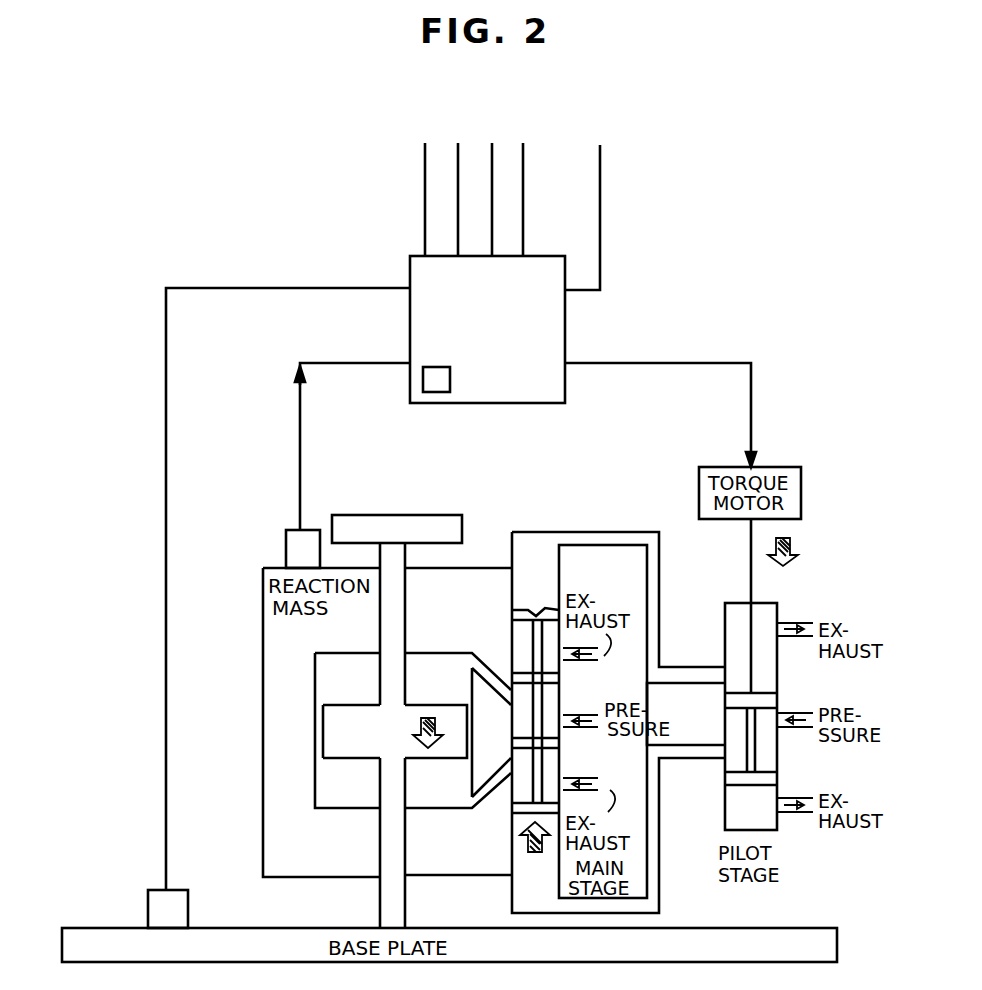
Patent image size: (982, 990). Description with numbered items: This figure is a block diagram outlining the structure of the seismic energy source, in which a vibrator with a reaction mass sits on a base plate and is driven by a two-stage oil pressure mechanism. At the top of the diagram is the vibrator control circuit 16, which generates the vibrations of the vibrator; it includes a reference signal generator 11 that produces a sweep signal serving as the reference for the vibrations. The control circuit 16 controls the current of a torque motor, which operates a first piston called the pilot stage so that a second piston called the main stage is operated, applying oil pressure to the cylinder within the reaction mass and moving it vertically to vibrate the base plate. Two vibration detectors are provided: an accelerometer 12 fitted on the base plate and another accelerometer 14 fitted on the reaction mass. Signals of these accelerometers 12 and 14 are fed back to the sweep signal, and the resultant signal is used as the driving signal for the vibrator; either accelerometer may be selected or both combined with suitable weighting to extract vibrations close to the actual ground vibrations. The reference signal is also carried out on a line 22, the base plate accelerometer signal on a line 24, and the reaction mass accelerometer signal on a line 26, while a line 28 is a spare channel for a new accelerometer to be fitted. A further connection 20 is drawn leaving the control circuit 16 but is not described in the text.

The reference signal generator 11 is at (433, 392).
The accelerometer 12 is at (116, 884).
The accelerometer 14 is at (242, 533).
The vibrator control circuit 16 is at (431, 514).
The output line 20 is at (600, 172).
The line 22 is at (425, 157).
The line 24 is at (458, 152).
The line 26 is at (492, 163).
The line 28 is at (523, 158).